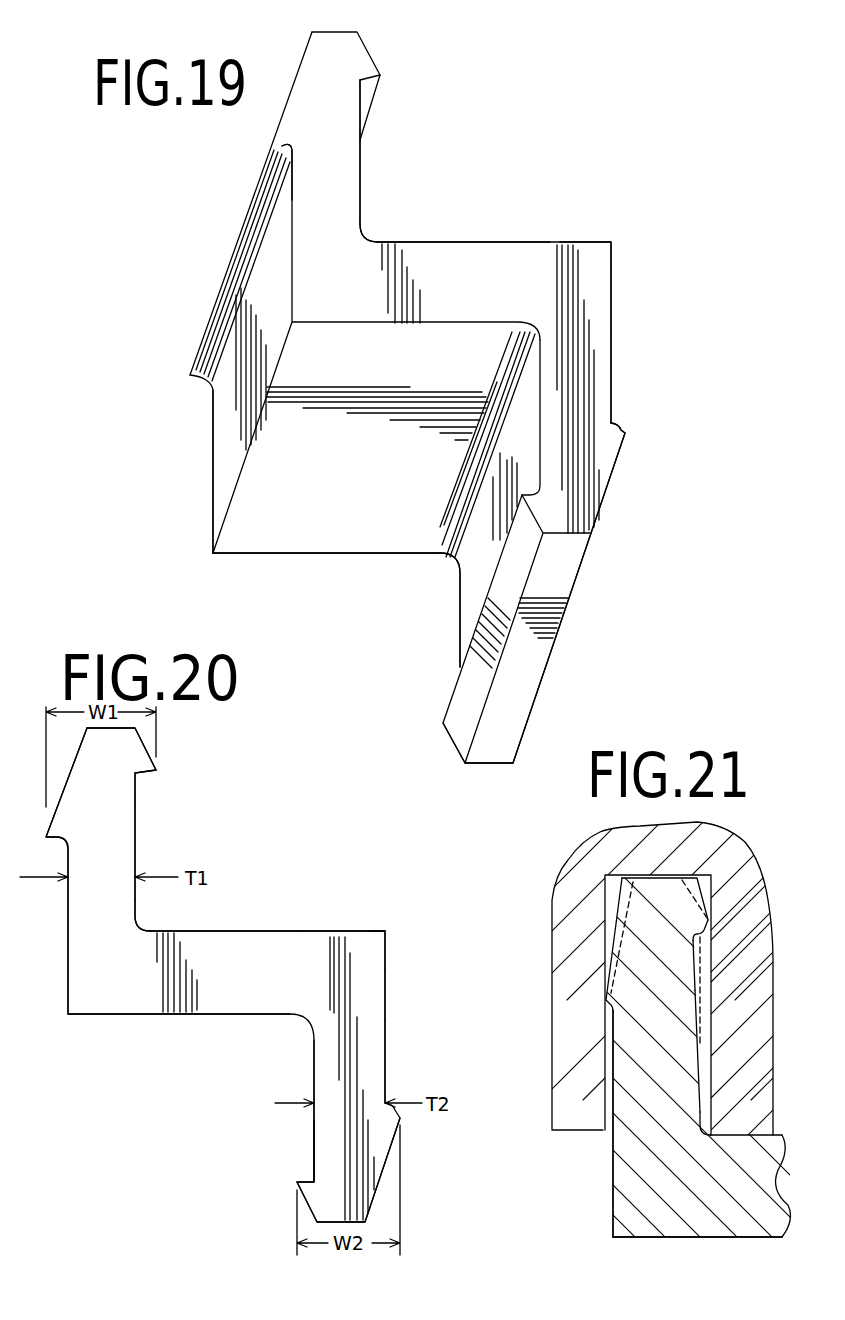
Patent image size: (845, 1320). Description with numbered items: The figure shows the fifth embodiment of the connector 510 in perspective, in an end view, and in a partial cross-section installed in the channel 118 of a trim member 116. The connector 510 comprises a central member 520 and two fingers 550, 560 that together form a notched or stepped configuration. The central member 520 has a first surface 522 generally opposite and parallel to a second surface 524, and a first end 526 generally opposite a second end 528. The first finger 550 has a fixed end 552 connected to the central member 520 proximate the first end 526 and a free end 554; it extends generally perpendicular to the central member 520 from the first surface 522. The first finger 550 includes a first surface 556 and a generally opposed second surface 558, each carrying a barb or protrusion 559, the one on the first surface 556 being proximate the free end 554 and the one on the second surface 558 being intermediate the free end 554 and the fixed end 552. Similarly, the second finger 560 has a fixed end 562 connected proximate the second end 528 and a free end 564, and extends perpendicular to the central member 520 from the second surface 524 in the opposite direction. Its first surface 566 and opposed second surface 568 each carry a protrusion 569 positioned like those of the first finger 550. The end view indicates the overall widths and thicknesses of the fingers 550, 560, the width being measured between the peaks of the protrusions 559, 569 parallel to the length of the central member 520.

In FIG. 19, the connector 510 is at (591, 153).
In FIG. 20, the connector 510 is at (163, 1112).
In FIG. 21, the connector 510 is at (590, 1216).
In FIG. 19, the central member 520 is at (507, 262).
In FIG. 20, the central member 520 is at (280, 953).
In FIG. 21, the central member 520 is at (718, 1147).
In FIG. 19, the first surface 522 is at (481, 242).
In FIG. 20, the first surface 522 is at (298, 900).
In FIG. 21, the first surface 522 is at (728, 1177).
In FIG. 19, the second surface 524 is at (338, 488).
In FIG. 20, the second surface 524 is at (220, 1017).
In FIG. 21, the second surface 524 is at (808, 1272).
In FIG. 19, the first end 526 is at (302, 286).
In FIG. 20, the first end 526 is at (70, 980).
In FIG. 21, the first end 526 is at (625, 1195).
In FIG. 19, the second end 528 is at (600, 262).
In FIG. 20, the second end 528 is at (367, 957).
In FIG. 19, the first finger 550 is at (342, 173).
In FIG. 20, the first finger 550 is at (120, 843).
In FIG. 21, the first finger 550 is at (653, 1043).
In FIG. 19, the fixed end 552 is at (333, 232).
In FIG. 20, the fixed end 552 is at (123, 907).
In FIG. 21, the fixed end 552 is at (677, 1108).
In FIG. 19, the free end 554 is at (323, 30).
In FIG. 20, the free end 554 is at (103, 729).
In FIG. 21, the free end 554 is at (663, 876).
In FIG. 19, the first surface 556 is at (361, 110).
In FIG. 20, the first surface 556 is at (226, 835).
In FIG. 19, the second surface 558 is at (270, 256).
In FIG. 20, the second surface 558 is at (68, 897).
In FIG. 21, the second surface 558 is at (617, 1060).
In FIG. 19, the barb or protrusion 559 is at (379, 58).
In FIG. 21, the barb or protrusion 559 is at (716, 918).
In FIG. 19, the second finger 560 is at (598, 350).
In FIG. 20, the second finger 560 is at (343, 1057).
In FIG. 19, the fixed end 562 is at (598, 317).
In FIG. 20, the fixed end 562 is at (362, 1003).
In FIG. 19, the free end 564 is at (595, 527).
In FIG. 20, the free end 564 is at (330, 1210).
In FIG. 19, the first surface 566 is at (482, 567).
In FIG. 20, the first surface 566 is at (315, 1127).
In FIG. 21, the first surface 566 is at (695, 987).
In FIG. 19, the second surface 568 is at (613, 390).
In FIG. 20, the second surface 568 is at (468, 1048).
In FIG. 19, the barb or protrusion 569 is at (622, 434).
In FIG. 21, the trim member 116 is at (571, 904).
In FIG. 21, the slot or channel 118 is at (610, 876).